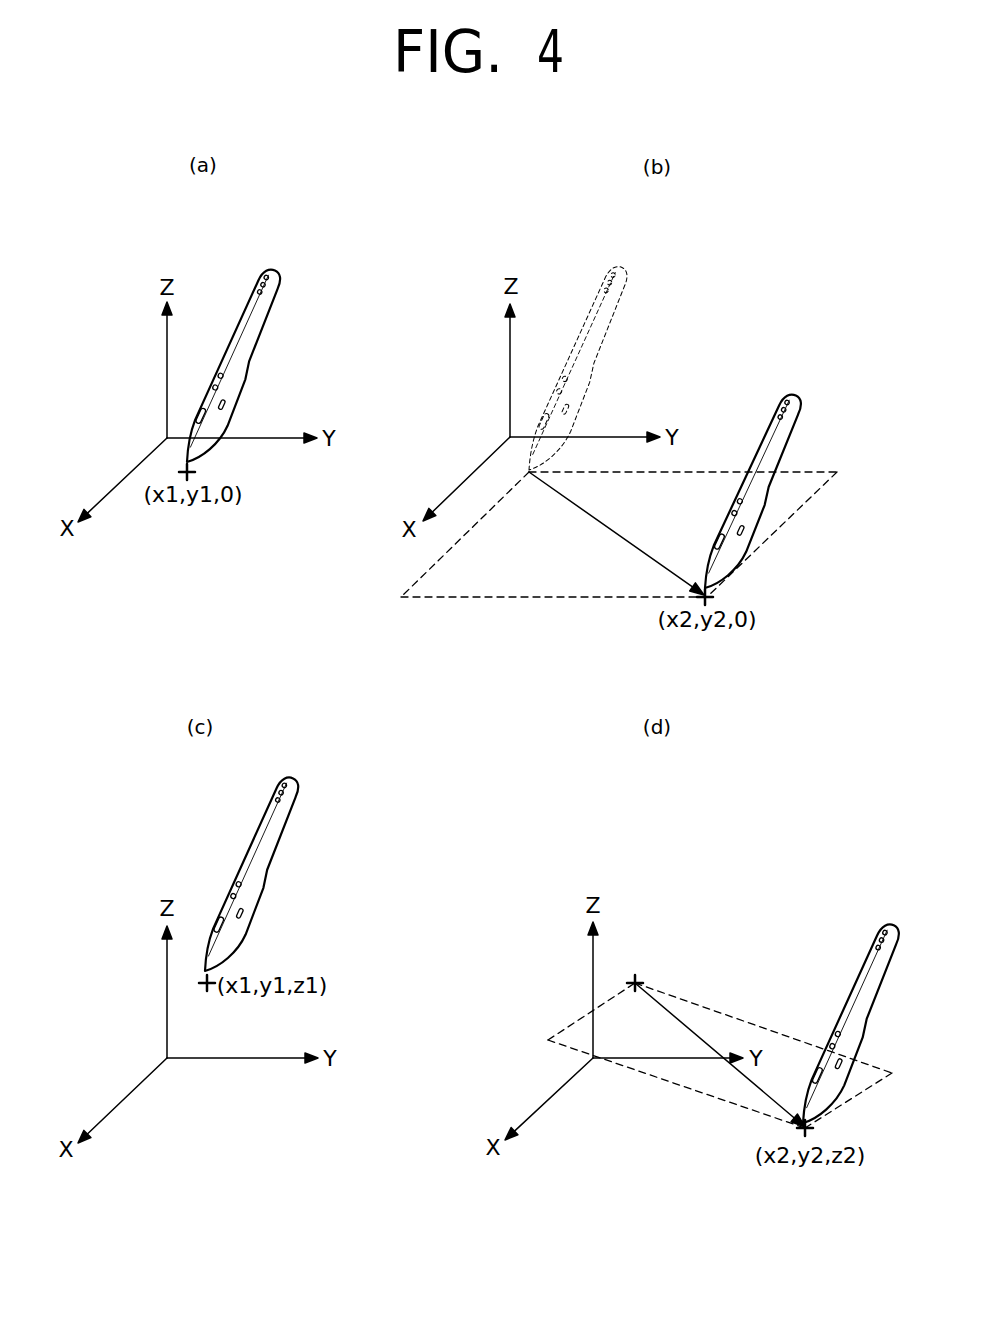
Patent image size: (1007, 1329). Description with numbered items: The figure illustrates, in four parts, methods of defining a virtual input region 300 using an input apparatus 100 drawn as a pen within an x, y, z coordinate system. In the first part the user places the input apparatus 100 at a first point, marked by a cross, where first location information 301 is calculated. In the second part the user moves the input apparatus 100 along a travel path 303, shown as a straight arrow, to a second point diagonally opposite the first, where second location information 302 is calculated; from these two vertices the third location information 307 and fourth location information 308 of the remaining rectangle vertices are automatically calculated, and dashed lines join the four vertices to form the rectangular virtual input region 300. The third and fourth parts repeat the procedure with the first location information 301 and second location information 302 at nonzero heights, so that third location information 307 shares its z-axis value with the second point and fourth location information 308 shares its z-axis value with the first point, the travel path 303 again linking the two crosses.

The input apparatus 100 is at (275, 262).
The virtual input region 300 is at (710, 472).
The first location information 301 is at (185, 471).
The second location information 302 is at (714, 600).
The travel path 303 is at (636, 551).
The third location information 307 is at (834, 472).
The fourth location information 308 is at (401, 595).